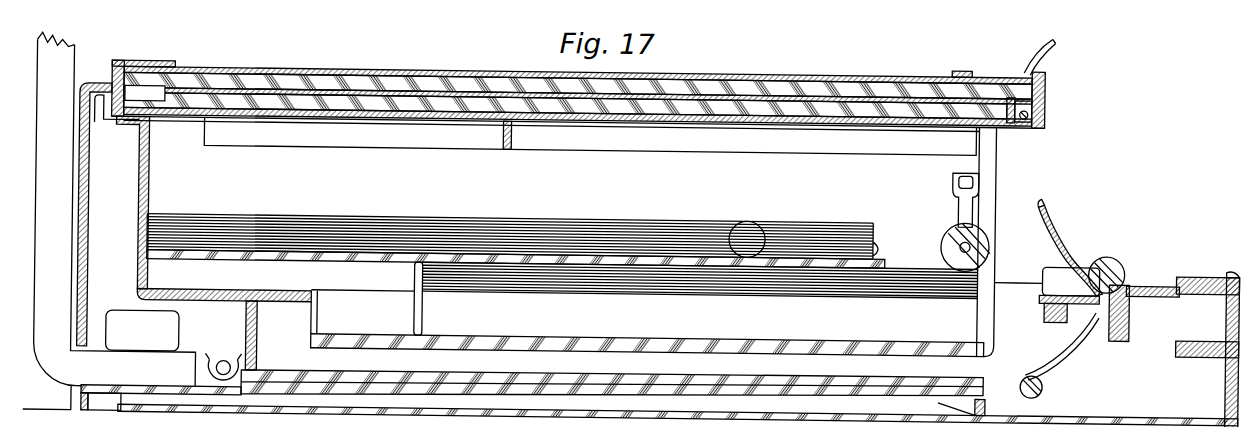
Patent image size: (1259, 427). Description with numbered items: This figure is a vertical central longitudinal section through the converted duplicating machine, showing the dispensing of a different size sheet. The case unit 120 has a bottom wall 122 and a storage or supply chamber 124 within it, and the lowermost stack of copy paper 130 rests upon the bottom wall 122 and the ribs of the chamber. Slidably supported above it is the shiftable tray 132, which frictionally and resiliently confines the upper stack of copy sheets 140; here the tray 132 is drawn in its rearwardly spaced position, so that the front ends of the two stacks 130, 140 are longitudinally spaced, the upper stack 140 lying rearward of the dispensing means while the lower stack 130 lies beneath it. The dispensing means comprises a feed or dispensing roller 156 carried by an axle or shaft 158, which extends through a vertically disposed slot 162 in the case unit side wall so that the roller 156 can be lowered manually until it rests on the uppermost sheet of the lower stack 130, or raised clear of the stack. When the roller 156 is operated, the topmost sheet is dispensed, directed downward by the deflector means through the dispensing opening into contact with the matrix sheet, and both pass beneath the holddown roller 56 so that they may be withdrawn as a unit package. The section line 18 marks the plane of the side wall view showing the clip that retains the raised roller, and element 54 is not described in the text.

The section line 18- 18 is at (760, 94).
The spring lever 54 is at (1066, 249).
The holddown roller 56 is at (1113, 251).
The case unit 120 is at (1000, 160).
The bottom wall 122 is at (258, 292).
The storage or supply chamber 124 is at (148, 196).
The lowermost stack of copy paper 130 is at (695, 266).
The shiftable tray 132 is at (212, 261).
The upper stack of copy sheets 140 is at (604, 236).
The feed or dispensing roller 156 is at (947, 239).
The axle or shaft 158 is at (982, 235).
The vertically disposed slot 162 is at (955, 193).